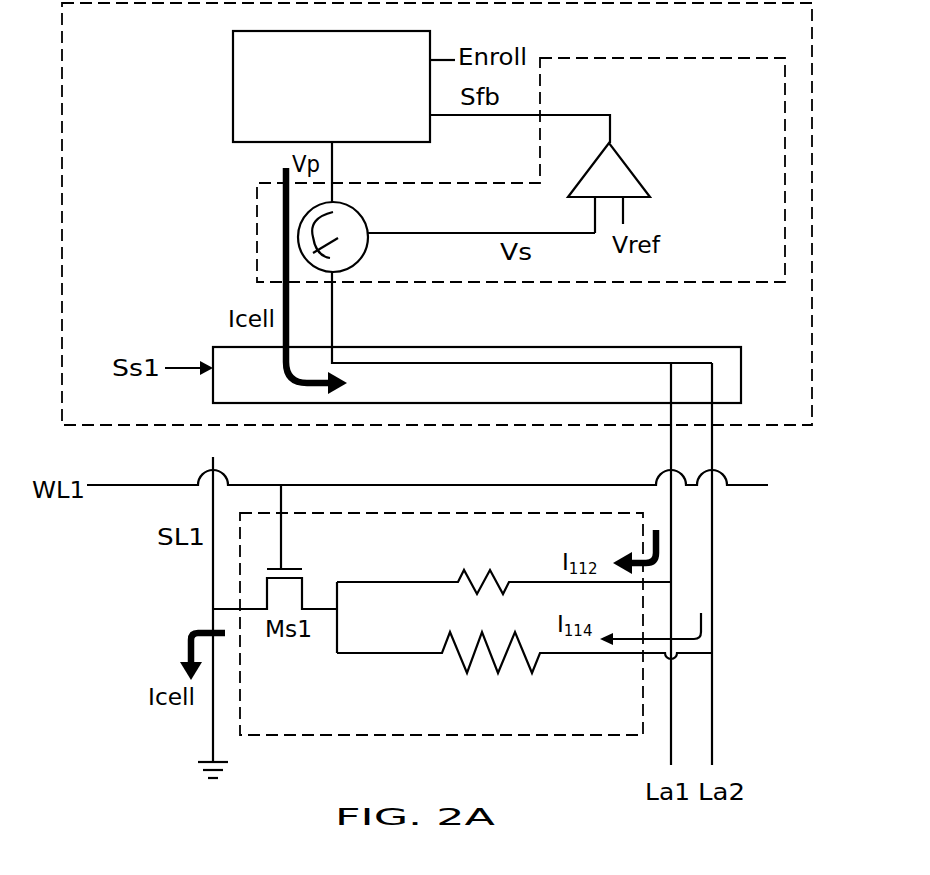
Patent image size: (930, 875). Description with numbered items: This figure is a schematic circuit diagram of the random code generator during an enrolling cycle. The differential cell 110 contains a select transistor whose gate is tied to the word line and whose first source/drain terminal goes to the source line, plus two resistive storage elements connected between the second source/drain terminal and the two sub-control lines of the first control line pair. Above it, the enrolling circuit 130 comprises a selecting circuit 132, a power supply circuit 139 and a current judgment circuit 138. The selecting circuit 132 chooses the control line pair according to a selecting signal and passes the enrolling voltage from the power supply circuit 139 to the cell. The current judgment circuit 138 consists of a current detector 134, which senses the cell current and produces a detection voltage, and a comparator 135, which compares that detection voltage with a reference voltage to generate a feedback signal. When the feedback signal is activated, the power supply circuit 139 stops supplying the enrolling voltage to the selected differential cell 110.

The enrolling circuit 130 is at (137, 107).
The power supply circuit 139 is at (355, 124).
The current judgment circuit 138 is at (760, 127).
The comparator 135 is at (627, 157).
The current detector 134 is at (362, 211).
The selecting circuit 132 is at (655, 347).
The differential cell 110 is at (300, 721).